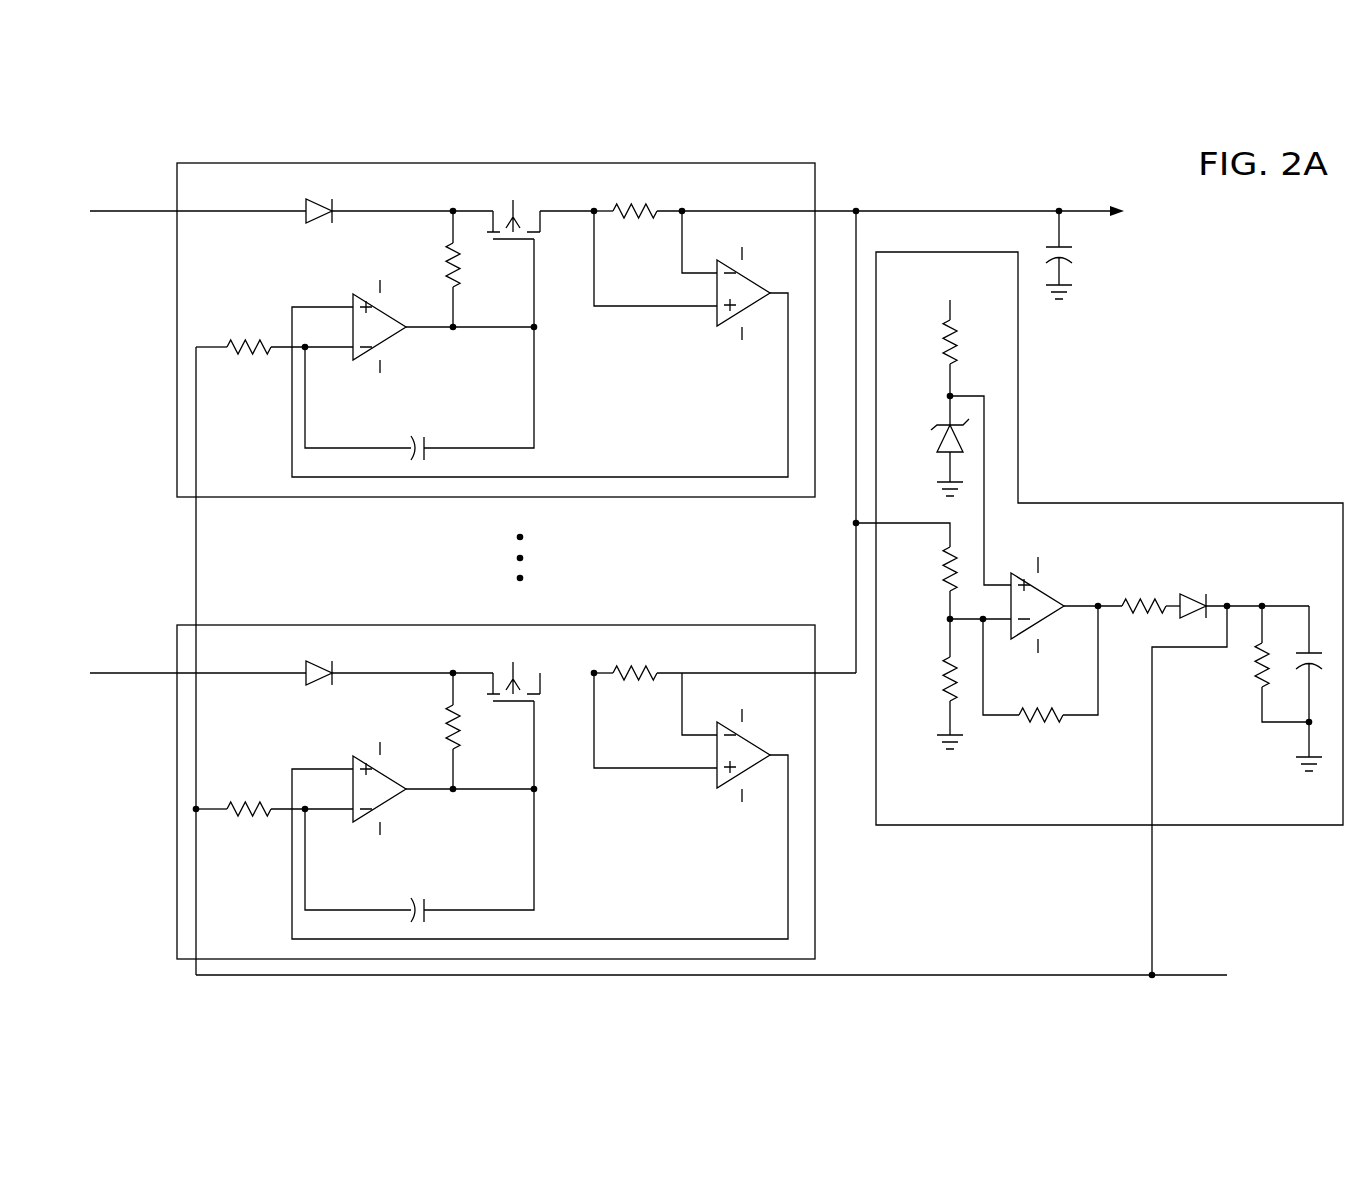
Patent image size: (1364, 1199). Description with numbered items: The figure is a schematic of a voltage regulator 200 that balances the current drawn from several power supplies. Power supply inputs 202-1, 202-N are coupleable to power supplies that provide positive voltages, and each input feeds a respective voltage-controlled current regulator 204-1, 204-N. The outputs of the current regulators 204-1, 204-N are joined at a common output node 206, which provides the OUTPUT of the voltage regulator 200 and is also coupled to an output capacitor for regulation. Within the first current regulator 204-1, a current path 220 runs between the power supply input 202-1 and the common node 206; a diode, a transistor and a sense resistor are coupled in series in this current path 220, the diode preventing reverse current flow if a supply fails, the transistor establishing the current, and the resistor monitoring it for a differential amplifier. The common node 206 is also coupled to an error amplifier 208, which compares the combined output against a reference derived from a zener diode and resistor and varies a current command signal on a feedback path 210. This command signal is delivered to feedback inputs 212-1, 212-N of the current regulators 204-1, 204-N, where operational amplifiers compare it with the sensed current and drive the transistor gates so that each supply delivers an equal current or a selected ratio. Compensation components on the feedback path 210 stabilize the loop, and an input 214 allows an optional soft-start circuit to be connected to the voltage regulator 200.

The voltage regulator 200 is at (1245, 343).
The power supply input 202-1 is at (198, 231).
The power supply input 202-N is at (198, 693).
The voltage-controlled current regulator 204-1 is at (177, 457).
The voltage-controlled current regulator 204-N is at (177, 919).
The common output node 206 is at (969, 195).
The error amplifier 208 is at (1099, 538).
The feedback path 210 is at (674, 957).
The feedback input 212-1 is at (213, 349).
The feedback input 212-N is at (213, 811).
The input for an optional soft-start circuit 214 is at (1188, 792).
The current path 220 is at (567, 191).